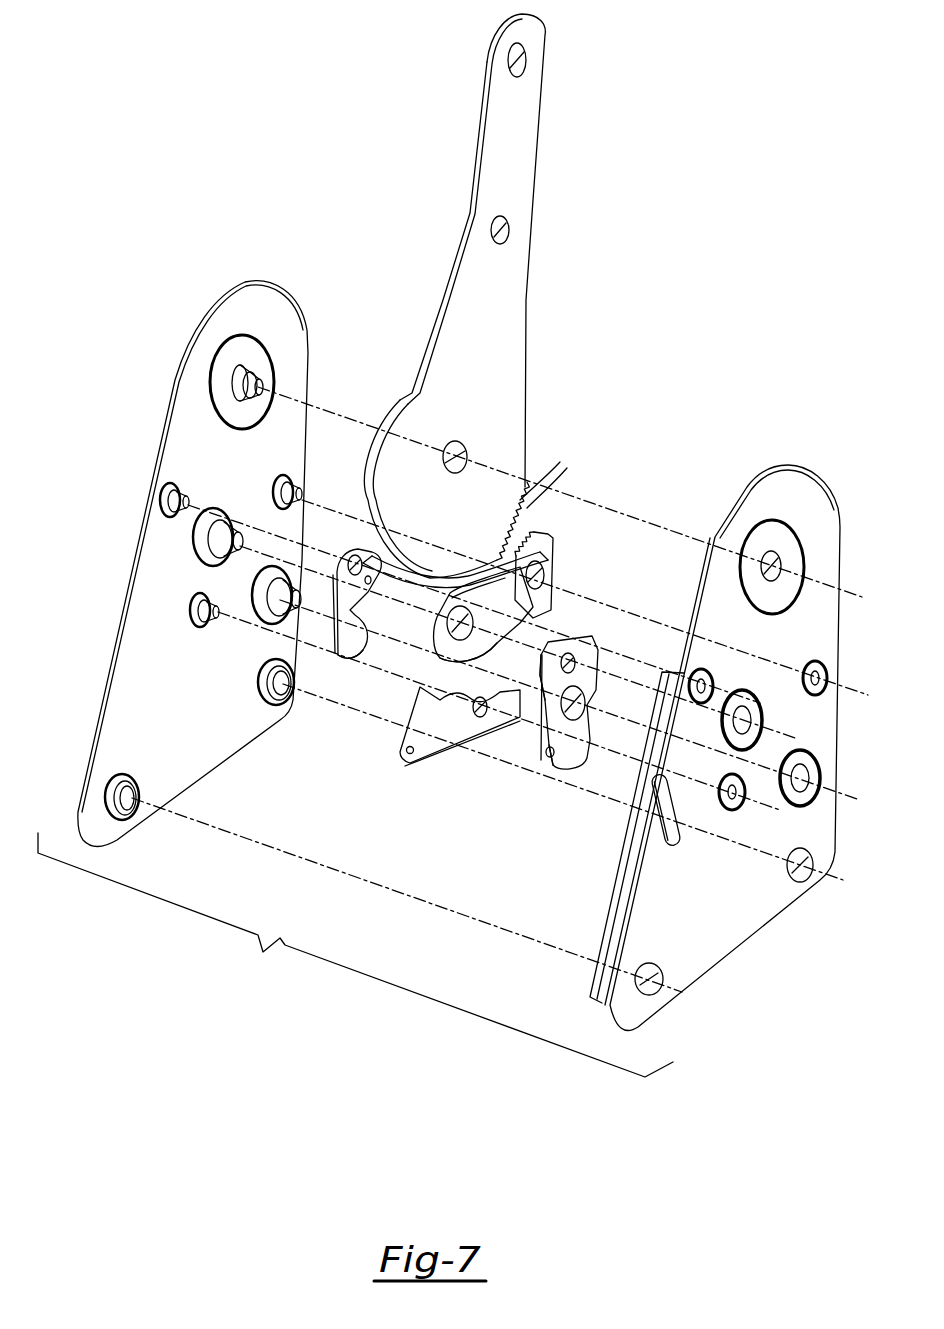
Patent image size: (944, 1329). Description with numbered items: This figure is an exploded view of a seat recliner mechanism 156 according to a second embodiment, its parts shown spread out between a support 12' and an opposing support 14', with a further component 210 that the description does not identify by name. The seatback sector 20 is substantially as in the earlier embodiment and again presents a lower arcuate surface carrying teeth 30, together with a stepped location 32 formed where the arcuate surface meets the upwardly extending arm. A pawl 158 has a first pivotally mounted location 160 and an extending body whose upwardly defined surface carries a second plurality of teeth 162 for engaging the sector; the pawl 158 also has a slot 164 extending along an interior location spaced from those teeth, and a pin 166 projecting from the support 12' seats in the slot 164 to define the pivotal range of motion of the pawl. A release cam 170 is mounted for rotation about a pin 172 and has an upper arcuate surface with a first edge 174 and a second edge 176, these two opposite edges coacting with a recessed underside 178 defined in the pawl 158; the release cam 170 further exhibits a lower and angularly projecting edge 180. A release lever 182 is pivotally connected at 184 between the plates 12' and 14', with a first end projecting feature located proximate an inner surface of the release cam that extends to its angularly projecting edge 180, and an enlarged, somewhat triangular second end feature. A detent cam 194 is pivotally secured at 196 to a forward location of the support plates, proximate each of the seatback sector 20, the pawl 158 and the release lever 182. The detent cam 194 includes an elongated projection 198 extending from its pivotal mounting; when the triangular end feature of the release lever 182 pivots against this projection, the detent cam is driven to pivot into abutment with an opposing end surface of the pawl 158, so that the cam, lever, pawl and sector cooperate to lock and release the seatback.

The seatback sector 20 is at (520, 157).
The stepped location 32 is at (408, 397).
The teeth 30 is at (554, 476).
The pin 166 is at (300, 483).
The pivotal securing location 196 is at (165, 515).
The pivotal connection 184 is at (200, 627).
The pin 172 is at (263, 613).
The support 12' is at (166, 564).
The opposing support 14' is at (715, 748).
The bracket 210 is at (390, 567).
The second plurality of teeth 162 is at (522, 548).
The slot 164 is at (547, 567).
The pawl 158 is at (547, 597).
The first edge 174 is at (593, 643).
The detent cam 194 is at (352, 607).
The elongated projection 198 is at (347, 657).
The first pivotally mounted location 160 is at (440, 657).
The recessed underside 178 is at (487, 653).
The release lever 182 is at (423, 750).
The second edge 176 is at (543, 710).
The release cam 170 is at (560, 740).
The lower angularly projecting edge 180 is at (532, 760).
The seat recliner mechanism 156 is at (355, 955).